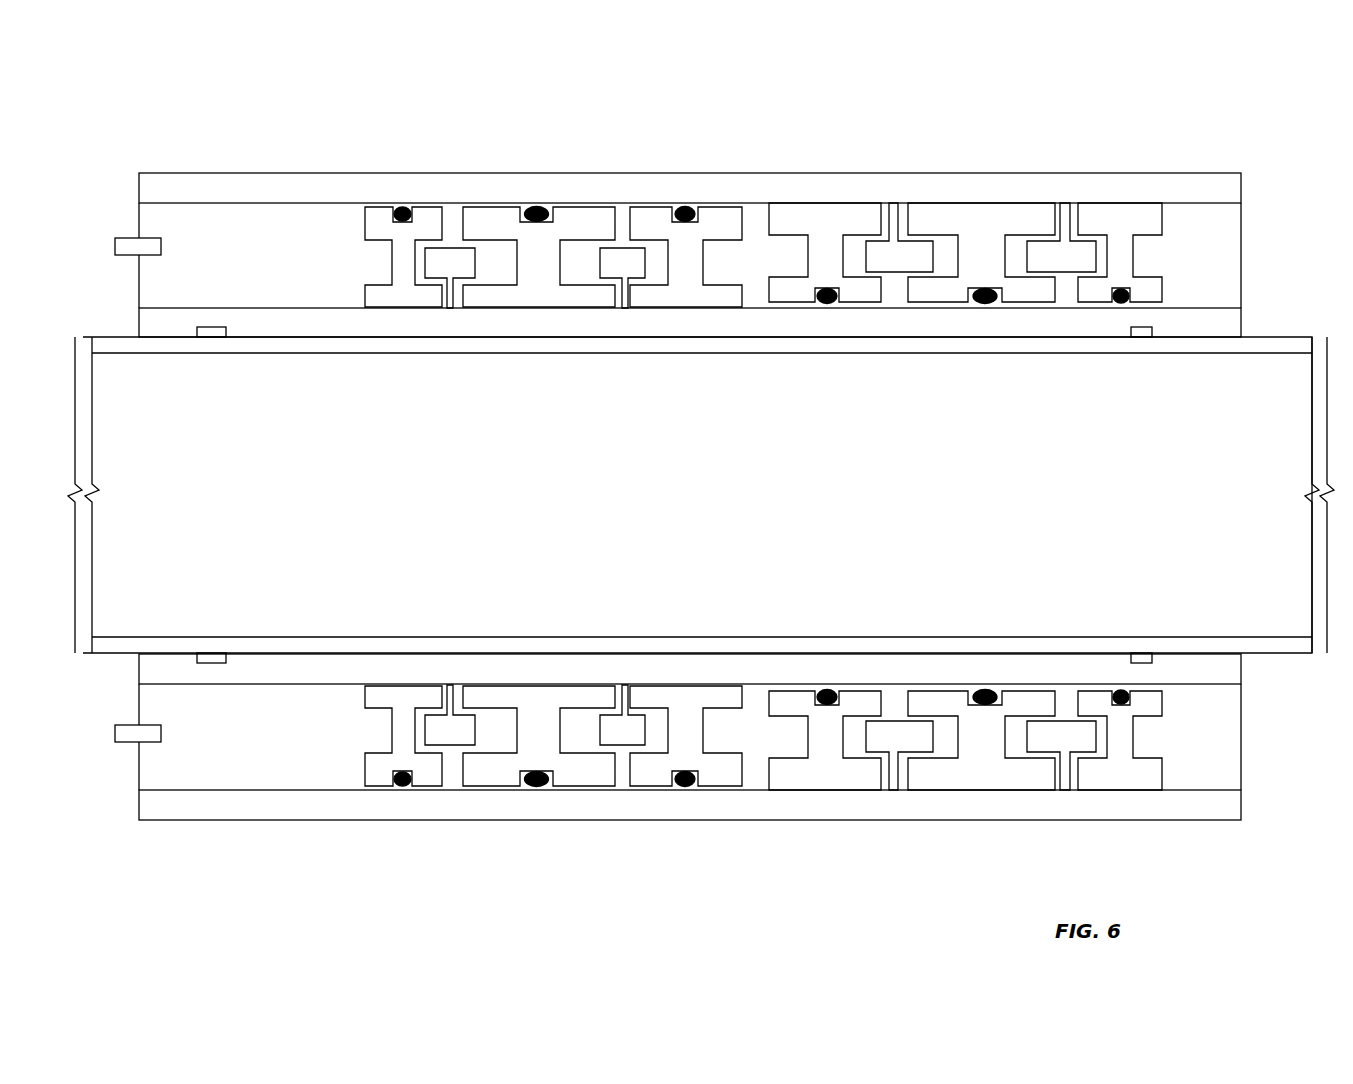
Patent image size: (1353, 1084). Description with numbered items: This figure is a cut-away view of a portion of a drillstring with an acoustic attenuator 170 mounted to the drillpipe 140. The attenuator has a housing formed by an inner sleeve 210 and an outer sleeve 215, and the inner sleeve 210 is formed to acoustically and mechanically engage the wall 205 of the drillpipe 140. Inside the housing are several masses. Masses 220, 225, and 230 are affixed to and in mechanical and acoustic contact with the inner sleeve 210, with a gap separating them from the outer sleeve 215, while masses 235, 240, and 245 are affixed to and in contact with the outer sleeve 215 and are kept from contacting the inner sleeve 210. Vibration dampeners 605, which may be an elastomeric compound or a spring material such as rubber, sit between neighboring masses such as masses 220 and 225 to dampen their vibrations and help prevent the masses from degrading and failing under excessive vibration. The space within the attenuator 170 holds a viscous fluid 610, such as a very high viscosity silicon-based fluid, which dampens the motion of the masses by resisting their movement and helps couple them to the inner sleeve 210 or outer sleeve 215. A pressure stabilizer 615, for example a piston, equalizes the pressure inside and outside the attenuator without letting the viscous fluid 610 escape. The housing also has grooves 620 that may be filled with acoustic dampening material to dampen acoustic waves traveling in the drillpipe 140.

The drillpipe 140 is at (1252, 316).
The acoustic attenuator 170 is at (201, 127).
The wall of the drillpipe 205 is at (1288, 340).
The inner sleeve 210 is at (172, 325).
The outer sleeve 215 is at (173, 188).
The mass 220 is at (403, 291).
The mass 225 is at (545, 297).
The mass 230 is at (687, 297).
The mass 235 is at (827, 228).
The mass 240 is at (982, 213).
The mass 245 is at (1118, 215).
The vibration dampener 605 is at (447, 292).
The viscous fluid 610 is at (336, 254).
The pressure stabilizer 615 is at (152, 256).
The groove 620 is at (212, 338).